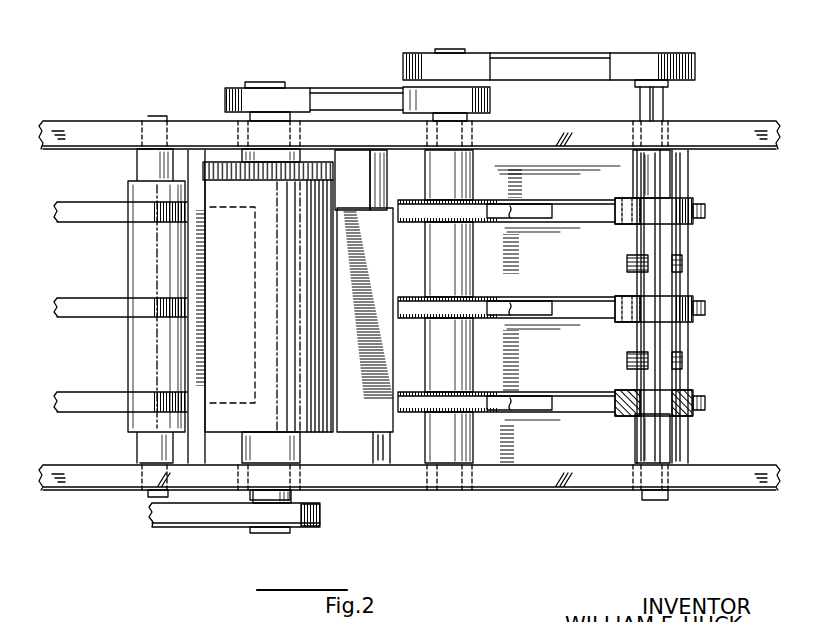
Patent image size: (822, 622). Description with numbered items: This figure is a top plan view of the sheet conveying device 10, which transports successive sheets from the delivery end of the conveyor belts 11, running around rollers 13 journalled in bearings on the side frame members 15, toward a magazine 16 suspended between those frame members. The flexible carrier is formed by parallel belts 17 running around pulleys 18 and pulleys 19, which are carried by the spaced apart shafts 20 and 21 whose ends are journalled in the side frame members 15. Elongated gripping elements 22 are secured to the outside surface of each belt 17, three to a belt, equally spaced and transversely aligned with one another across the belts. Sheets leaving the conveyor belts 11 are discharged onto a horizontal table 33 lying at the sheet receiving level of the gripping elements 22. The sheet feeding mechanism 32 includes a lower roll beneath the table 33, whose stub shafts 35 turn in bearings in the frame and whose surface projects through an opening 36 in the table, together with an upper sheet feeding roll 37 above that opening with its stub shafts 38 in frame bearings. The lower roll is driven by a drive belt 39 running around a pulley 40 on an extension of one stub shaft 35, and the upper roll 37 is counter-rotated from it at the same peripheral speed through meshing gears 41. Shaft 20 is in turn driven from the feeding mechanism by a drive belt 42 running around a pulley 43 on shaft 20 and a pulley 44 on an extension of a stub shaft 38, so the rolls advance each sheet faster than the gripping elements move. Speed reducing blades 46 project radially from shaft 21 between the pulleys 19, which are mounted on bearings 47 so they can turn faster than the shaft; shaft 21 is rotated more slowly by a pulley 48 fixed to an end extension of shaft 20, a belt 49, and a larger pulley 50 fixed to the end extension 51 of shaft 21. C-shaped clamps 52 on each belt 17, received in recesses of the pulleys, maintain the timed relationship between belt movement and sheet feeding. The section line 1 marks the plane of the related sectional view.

The section line 1- 1 is at (97, 448).
The sheet conveying device 10 is at (522, 165).
The conveyor belt 11 is at (75, 206).
The roller 13 is at (136, 252).
The side frame member 15 is at (113, 127).
The magazine 16 is at (616, 371).
The belt 17 is at (576, 311).
The pulley 18 is at (461, 306).
The pulley 19 is at (660, 306).
The shaft 20 is at (463, 258).
The shaft 21 is at (655, 450).
The gripping element 22 is at (523, 205).
The sheet feeding mechanism 32 is at (272, 295).
The table 33 is at (385, 248).
The stub shaft 35 is at (292, 492).
The opening 36 is at (290, 355).
The upper sheet feeding roll 37 is at (325, 296).
The stub shaft 38 is at (291, 118).
The drive belt 39 is at (178, 515).
The pulley 40 is at (303, 530).
The meshing gear 41 is at (361, 180).
The drive belt 42 is at (344, 98).
The pulley 43 is at (490, 86).
The pulley 44 is at (301, 87).
The speed reducing blade 46 is at (634, 257).
The bearing 47 is at (633, 406).
The pulley 48 is at (471, 54).
The belt 49 is at (548, 67).
The pulley 50 is at (683, 54).
The end extension 51 is at (656, 100).
The C-shaped clamp 52 is at (627, 203).